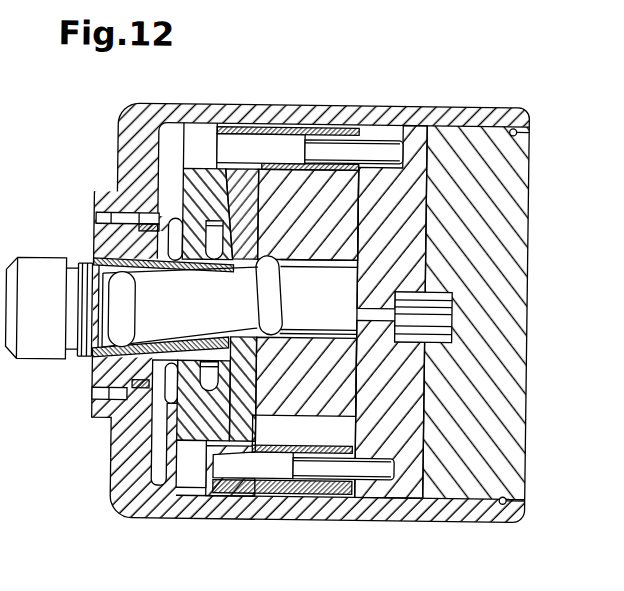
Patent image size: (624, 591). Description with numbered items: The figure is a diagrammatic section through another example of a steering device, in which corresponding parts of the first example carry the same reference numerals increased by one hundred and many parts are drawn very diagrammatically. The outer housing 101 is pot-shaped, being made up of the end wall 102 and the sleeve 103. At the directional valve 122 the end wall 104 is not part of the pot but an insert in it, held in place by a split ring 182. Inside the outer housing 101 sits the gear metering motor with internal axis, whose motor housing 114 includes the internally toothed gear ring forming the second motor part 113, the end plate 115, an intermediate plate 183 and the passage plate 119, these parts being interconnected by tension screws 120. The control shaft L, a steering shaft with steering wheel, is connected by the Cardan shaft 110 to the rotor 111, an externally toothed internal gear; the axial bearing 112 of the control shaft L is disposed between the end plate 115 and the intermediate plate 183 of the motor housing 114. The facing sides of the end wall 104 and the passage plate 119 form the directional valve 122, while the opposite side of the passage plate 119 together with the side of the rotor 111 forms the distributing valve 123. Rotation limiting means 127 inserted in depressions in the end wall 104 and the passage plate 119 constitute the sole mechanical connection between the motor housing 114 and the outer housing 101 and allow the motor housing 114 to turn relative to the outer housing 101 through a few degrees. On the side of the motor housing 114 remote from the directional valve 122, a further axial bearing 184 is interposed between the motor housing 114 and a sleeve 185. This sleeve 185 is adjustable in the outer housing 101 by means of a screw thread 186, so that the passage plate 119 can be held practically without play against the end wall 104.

The outer housing 101 is at (112, 463).
The end wall 102 is at (134, 417).
The sleeve 103 is at (442, 508).
The end wall 104 is at (491, 220).
The Cardan shaft 110 is at (177, 299).
The rotor 111 is at (296, 207).
The axial bearing 112 is at (216, 234).
The second motor part 113 is at (334, 134).
The motor housing 114 is at (350, 128).
The end plate 115 is at (195, 420).
The passage plate 119 is at (386, 417).
The tension screws 120 is at (199, 476).
The directional valve 122 is at (426, 404).
The distributing valve 123 is at (361, 202).
The rotation limiting means 127 is at (444, 304).
The split ring 182 is at (525, 116).
The intermediate plate 183 is at (244, 426).
The further axial bearing 184 is at (173, 371).
The sleeve 185 is at (106, 246).
The screw thread 186 is at (94, 392).
The control shaft L is at (35, 278).